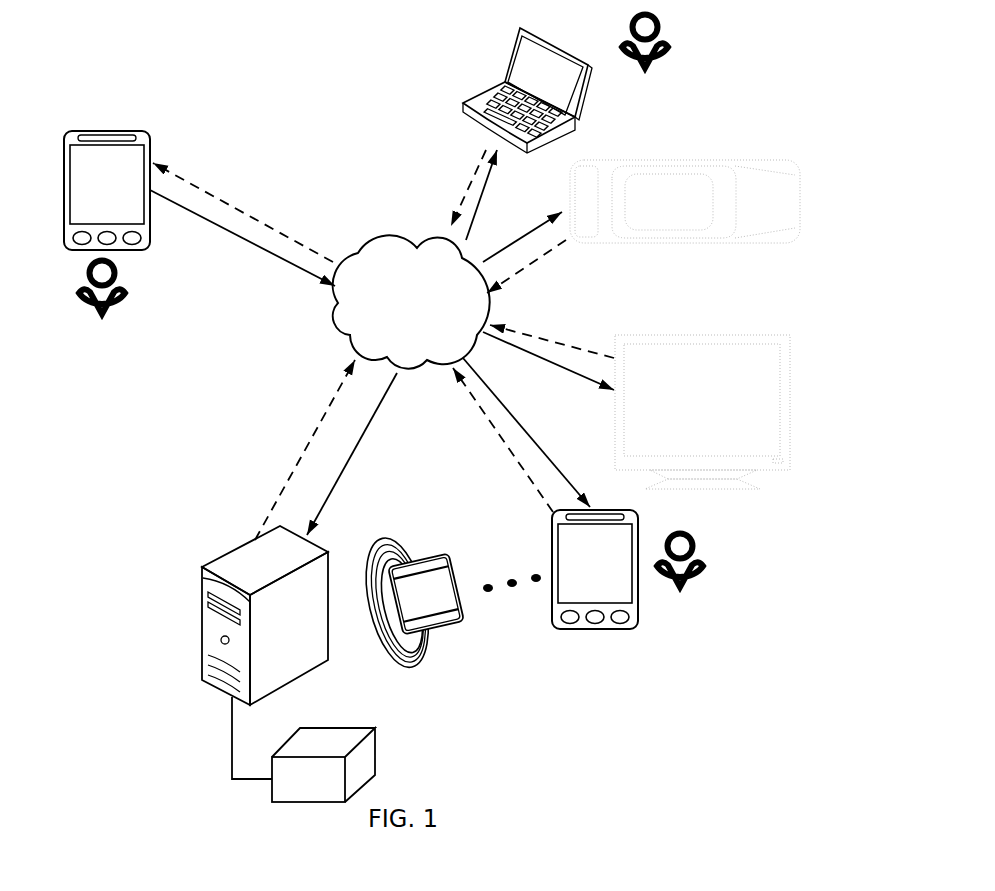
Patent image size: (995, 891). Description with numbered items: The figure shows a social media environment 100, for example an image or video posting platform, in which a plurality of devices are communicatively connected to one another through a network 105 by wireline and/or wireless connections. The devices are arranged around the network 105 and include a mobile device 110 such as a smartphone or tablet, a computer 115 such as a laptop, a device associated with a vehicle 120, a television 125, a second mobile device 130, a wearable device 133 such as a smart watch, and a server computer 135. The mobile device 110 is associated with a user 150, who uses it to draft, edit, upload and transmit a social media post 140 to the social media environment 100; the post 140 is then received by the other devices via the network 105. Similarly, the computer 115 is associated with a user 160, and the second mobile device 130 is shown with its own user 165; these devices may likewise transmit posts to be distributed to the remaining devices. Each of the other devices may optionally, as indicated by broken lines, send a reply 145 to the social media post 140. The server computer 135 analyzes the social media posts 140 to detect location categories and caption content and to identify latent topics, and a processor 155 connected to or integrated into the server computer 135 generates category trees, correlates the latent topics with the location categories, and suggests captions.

The social media environment 100 is at (167, 58).
The network 105 is at (402, 331).
The mobile device 110 is at (94, 197).
The computer 115 is at (534, 79).
The device associated with a vehicle 120 is at (651, 208).
The television 125 is at (677, 412).
The mobile device 130 is at (582, 565).
The wearable device 133 is at (413, 599).
The server computer 135 is at (272, 644).
The social media post 140 is at (382, 342).
The reply 145 is at (383, 345).
The user 150 is at (121, 288).
The processor 155 is at (300, 789).
The user 160 is at (664, 42).
The user 165 is at (699, 561).